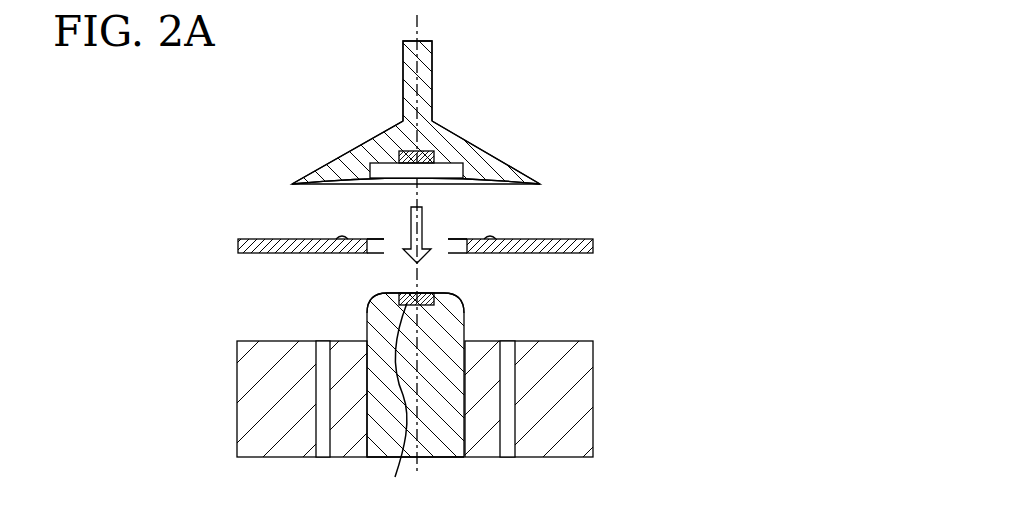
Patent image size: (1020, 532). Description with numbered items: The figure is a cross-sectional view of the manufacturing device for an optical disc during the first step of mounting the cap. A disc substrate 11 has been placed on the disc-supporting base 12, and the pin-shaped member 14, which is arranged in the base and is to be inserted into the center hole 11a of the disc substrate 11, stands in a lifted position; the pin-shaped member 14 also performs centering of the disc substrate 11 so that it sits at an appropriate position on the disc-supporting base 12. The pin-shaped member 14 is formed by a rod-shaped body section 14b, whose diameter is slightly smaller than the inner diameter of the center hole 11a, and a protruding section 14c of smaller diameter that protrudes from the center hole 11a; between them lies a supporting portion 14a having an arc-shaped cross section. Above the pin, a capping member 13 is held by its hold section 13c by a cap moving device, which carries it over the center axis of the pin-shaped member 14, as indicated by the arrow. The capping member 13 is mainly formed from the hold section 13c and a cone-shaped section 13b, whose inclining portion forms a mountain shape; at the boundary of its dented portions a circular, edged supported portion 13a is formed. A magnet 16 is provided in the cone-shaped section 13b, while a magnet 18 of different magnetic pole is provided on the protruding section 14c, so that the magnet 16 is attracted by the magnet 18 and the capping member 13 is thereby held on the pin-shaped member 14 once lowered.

The disc substrate 11 is at (472, 224).
The center hole 11a is at (466, 244).
The disc-supporting base 12 is at (582, 378).
The capping member 13 is at (422, 95).
The supported portion 13a is at (463, 177).
The cone-shaped section 13b is at (387, 143).
The hold section 13c is at (410, 77).
The pin-shaped member 14 is at (387, 389).
The supporting portion 14a is at (367, 307).
The rod-shaped body section 14b is at (383, 450).
The protruding section 14c is at (393, 296).
The magnet 16 is at (431, 152).
The magnet 18 is at (399, 403).